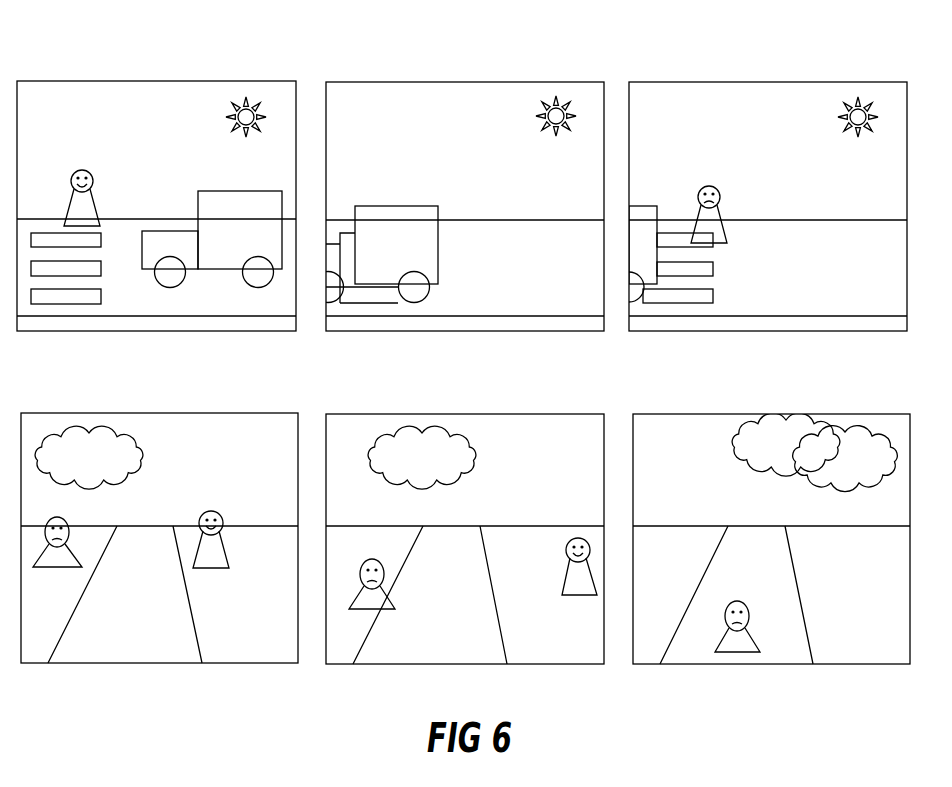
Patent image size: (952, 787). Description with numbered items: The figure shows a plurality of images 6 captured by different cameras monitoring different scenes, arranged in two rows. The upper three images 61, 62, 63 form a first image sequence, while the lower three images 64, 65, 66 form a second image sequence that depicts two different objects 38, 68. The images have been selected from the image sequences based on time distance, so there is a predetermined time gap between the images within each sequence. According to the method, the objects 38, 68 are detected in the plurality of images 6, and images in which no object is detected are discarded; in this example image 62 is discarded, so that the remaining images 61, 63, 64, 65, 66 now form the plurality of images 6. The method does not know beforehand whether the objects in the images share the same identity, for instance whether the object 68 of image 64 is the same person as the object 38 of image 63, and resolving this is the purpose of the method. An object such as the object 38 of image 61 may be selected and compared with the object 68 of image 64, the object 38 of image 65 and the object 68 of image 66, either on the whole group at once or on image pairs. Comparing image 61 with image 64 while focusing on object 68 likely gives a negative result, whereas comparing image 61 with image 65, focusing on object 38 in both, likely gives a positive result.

The plurality of images 6 is at (62, 67).
The image 61 is at (188, 80).
The image 62 is at (460, 81).
The image 63 is at (792, 82).
The image 64 is at (237, 413).
The image 65 is at (397, 414).
The image 66 is at (673, 414).
The object 38 is at (87, 205).
The object 68 is at (67, 561).